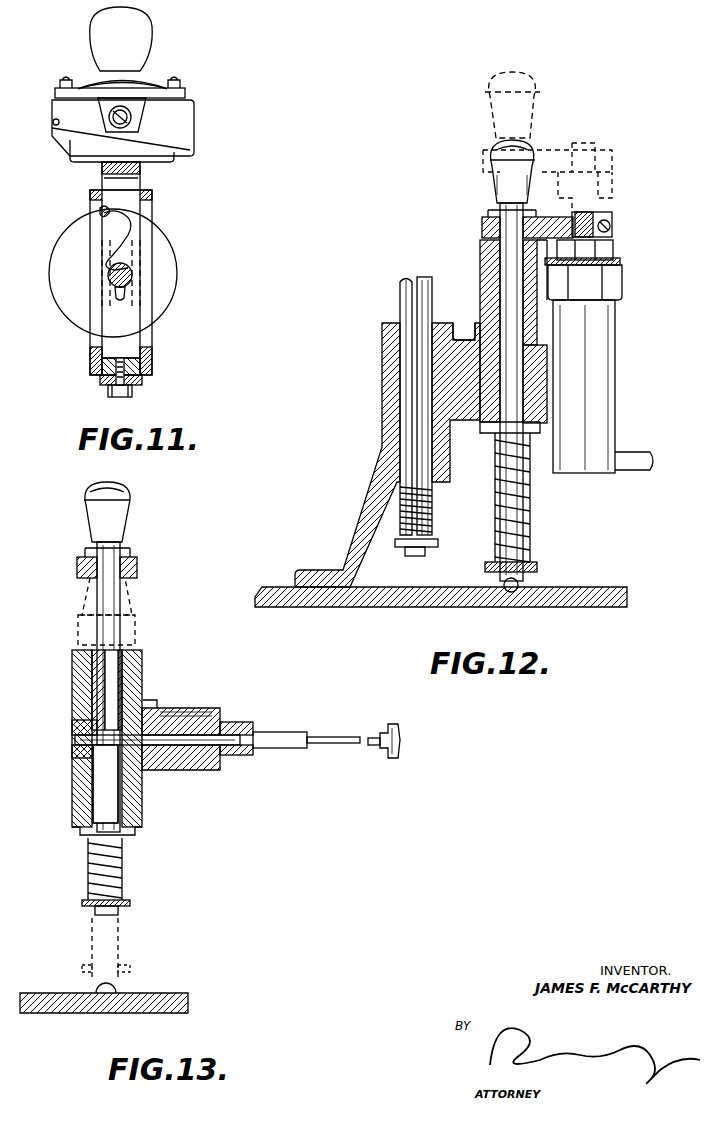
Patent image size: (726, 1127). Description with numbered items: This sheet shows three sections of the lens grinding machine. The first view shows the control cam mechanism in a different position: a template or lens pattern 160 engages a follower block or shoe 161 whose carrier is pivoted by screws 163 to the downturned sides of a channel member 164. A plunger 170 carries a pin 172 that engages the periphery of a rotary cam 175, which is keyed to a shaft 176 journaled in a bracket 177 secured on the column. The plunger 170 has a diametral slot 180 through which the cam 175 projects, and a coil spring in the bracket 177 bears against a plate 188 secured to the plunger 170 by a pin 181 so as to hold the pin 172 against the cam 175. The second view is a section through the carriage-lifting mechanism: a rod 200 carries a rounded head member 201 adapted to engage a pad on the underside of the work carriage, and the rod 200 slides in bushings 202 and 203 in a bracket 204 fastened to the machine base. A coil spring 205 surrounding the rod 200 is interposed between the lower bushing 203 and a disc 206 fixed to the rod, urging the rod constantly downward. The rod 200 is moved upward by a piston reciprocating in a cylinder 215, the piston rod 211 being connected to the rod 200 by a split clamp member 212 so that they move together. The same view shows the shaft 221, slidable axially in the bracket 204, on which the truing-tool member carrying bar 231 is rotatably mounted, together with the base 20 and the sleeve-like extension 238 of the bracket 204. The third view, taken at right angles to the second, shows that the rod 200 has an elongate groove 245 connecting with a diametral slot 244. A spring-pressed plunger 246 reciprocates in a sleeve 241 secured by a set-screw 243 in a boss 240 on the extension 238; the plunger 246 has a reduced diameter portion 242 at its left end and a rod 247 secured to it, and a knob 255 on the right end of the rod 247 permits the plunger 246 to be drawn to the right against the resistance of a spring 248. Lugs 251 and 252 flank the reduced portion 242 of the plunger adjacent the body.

In FIG. 11, the template or lens pattern 160 is at (154, 23).
In FIG. 11, the follower block or shoe 161 is at (80, 82).
In FIG. 11, the screws 163 is at (130, 124).
In FIG. 11, the channel member 164 is at (186, 120).
In FIG. 11, the plunger 170 is at (98, 376).
In FIG. 11, the pin 172 is at (106, 213).
In FIG. 11, the rotary cam 175 is at (85, 283).
In FIG. 11, the shaft 176 is at (132, 270).
In FIG. 11, the bracket 177 is at (150, 358).
In FIG. 11, the diametral slot 180 is at (146, 325).
In FIG. 11, the pin 181 is at (125, 397).
In FIG. 11, the plate 188 is at (144, 380).
In FIG. 12, the rounded head member 201 is at (496, 178).
In FIG. 13, the rounded head member 201 is at (128, 520).
In FIG. 12, the rod 200 is at (504, 259).
In FIG. 13, the rod 200 is at (120, 596).
In FIG. 12, the bushing 202 is at (498, 278).
In FIG. 13, the bushing 202 is at (85, 674).
In FIG. 12, the bushing 203 is at (520, 433).
In FIG. 12, the bracket 204 is at (392, 405).
In FIG. 12, the coil spring 205 is at (530, 486).
In FIG. 13, the coil spring 205 is at (123, 860).
In FIG. 12, the disc 206 is at (534, 564).
In FIG. 13, the disc 206 is at (132, 903).
In FIG. 12, the piston rod 211 is at (592, 215).
In FIG. 12, the split clamp member 212 is at (482, 228).
In FIG. 13, the split clamp member 212 is at (138, 567).
In FIG. 12, the cylinder 215 is at (607, 355).
In FIG. 12, the shaft 221 is at (410, 300).
In FIG. 12, the bar 231 is at (434, 525).
In FIG. 12, the sleeve-like extension 238 is at (485, 330).
In FIG. 13, the sleeve-like extension 238 is at (74, 795).
In FIG. 12, the base plate 20 is at (592, 598).
In FIG. 13, the base plate 20 is at (134, 998).
In FIG. 13, the boss 240 is at (150, 722).
In FIG. 13, the sleeve 241 is at (238, 752).
In FIG. 13, the reduced diameter portion 242 is at (76, 737).
In FIG. 13, the set-screw 243 is at (240, 718).
In FIG. 13, the slot 244 is at (112, 803).
In FIG. 13, the elongate groove 245 is at (108, 672).
In FIG. 13, the spring-pressed plunger 246 is at (160, 770).
In FIG. 13, the rod 247 is at (195, 760).
In FIG. 13, the spring 248 is at (200, 712).
In FIG. 13, the lower lug 251 is at (74, 748).
In FIG. 13, the upper lug 252 is at (74, 722).
In FIG. 13, the knob 255 is at (400, 736).